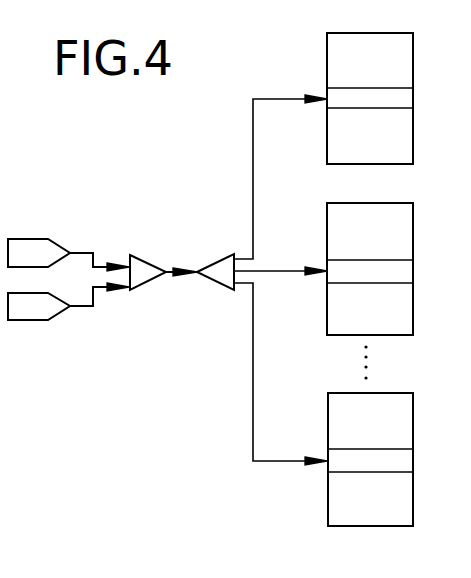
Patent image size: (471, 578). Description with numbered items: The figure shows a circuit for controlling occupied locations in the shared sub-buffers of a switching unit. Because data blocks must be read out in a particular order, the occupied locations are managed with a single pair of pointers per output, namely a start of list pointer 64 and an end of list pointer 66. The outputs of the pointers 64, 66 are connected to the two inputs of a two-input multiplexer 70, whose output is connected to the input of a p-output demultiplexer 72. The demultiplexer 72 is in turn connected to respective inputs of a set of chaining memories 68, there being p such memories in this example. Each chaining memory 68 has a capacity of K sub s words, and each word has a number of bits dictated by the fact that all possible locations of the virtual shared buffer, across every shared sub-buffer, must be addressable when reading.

The start of list pointer 64 is at (45, 250).
The end of list pointer 66 is at (45, 308).
The two-input multiplexer 70 is at (146, 281).
The p-output demultiplexer 72 is at (223, 280).
The chaining memories 68 is at (393, 435).